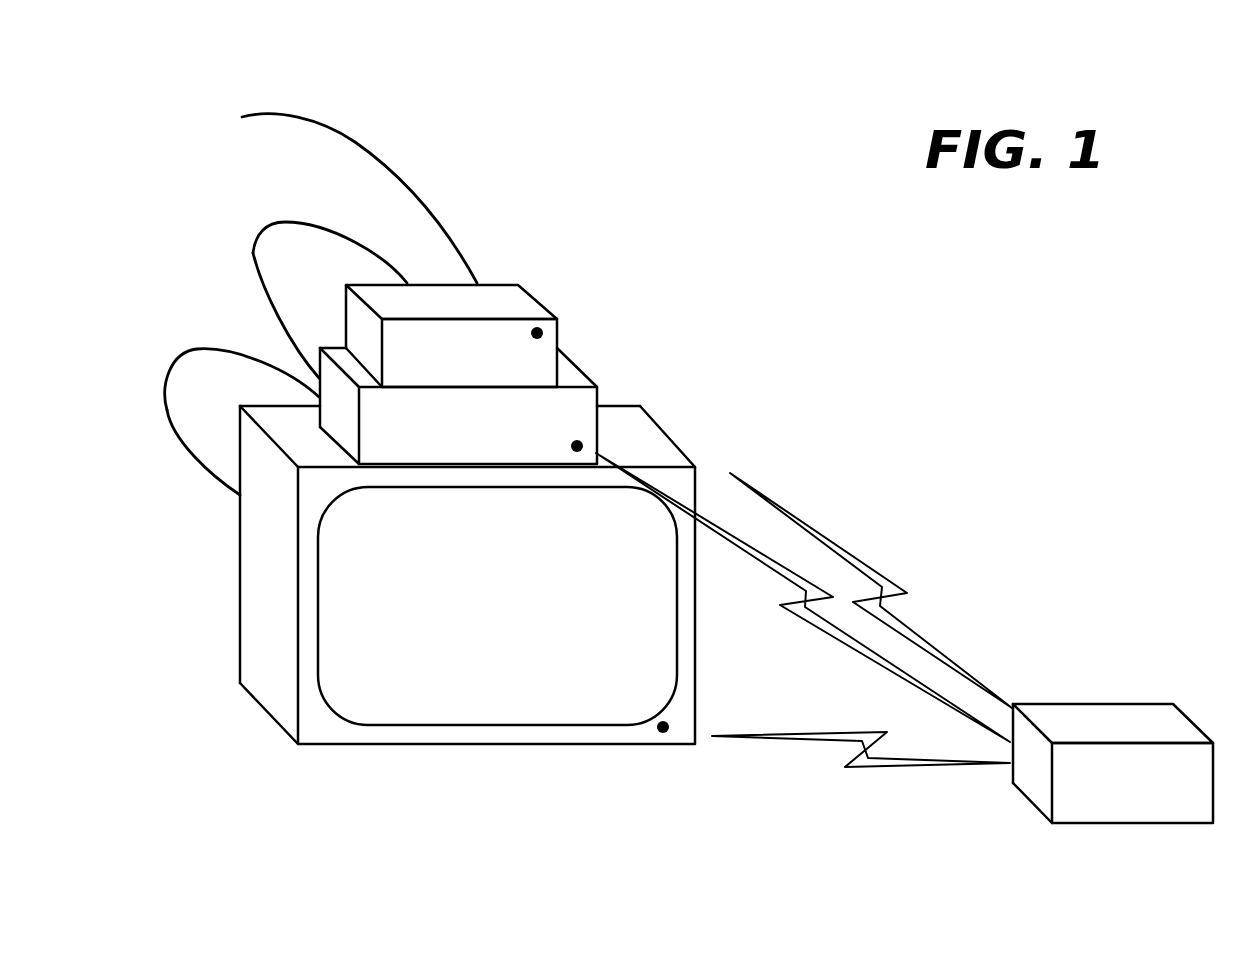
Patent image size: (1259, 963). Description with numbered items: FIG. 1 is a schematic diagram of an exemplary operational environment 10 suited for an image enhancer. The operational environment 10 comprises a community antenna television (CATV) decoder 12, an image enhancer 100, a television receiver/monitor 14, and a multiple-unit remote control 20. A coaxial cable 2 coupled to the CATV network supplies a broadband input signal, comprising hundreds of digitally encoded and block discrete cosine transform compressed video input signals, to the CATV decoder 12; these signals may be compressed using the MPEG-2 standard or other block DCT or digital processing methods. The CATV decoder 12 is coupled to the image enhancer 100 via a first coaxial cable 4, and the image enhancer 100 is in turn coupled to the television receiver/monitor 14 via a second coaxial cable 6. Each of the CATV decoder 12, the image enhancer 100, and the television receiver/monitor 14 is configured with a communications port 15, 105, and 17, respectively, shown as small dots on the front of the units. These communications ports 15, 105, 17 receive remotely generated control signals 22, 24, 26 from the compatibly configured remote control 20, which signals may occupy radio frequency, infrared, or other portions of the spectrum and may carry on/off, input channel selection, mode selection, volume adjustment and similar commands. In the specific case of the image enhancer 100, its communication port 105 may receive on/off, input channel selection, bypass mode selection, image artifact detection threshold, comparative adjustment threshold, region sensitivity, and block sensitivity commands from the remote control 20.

The operational environment 10 is at (400, 73).
The coaxial cable 2 is at (378, 162).
The first coaxial cable 4 is at (253, 255).
The second coaxial cable 6 is at (167, 410).
The CATV decoder 12 is at (502, 305).
The communications port 15 is at (539, 332).
The image enhancer 100 is at (578, 382).
The communication port 105 is at (580, 444).
The television receiver/monitor 14 is at (660, 457).
The communications port 17 is at (663, 727).
The remote control 20 is at (1170, 722).
The remotely generated control signal 22 is at (842, 548).
The remotely generated control signal 24 is at (802, 605).
The remotely generated control signal 26 is at (905, 764).